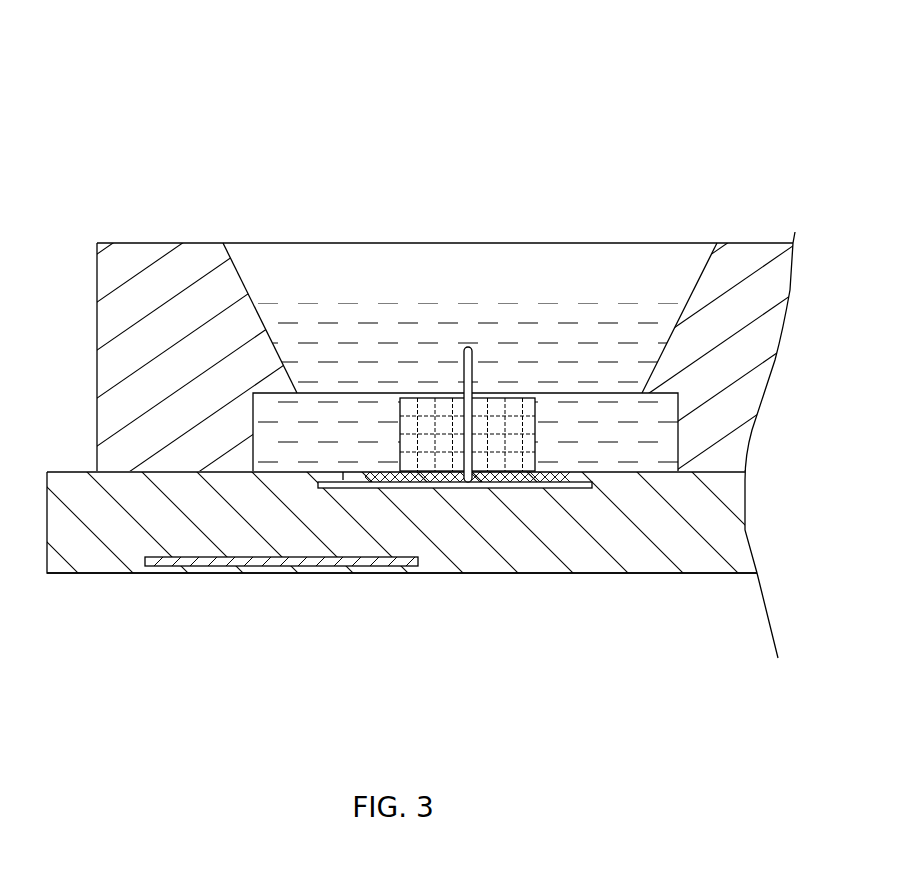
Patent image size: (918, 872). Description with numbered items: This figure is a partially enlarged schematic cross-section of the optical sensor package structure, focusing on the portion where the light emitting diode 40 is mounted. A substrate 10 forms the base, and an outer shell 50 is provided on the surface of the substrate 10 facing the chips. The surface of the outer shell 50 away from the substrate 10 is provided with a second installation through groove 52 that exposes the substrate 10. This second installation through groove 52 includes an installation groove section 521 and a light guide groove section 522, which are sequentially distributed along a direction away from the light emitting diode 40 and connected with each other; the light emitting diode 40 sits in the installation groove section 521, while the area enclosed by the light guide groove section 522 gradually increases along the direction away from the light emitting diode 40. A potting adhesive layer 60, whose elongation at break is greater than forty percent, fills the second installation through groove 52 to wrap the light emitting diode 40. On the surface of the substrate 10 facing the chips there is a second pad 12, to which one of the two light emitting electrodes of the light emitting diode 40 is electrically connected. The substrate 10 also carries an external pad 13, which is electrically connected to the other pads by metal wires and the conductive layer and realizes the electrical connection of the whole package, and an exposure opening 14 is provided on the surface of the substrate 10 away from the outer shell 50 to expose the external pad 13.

The substrate 10 is at (92, 542).
The second pad 12 is at (466, 491).
The external pad 13 is at (258, 559).
The exposure opening 14 is at (343, 574).
The light emitting diode 40 is at (531, 444).
The outer shell 50 is at (173, 318).
The second installation through groove 52 is at (470, 245).
The installation groove section 521 is at (600, 390).
The light guide groove section 522 is at (684, 293).
The potting adhesive layer 60 is at (347, 307).